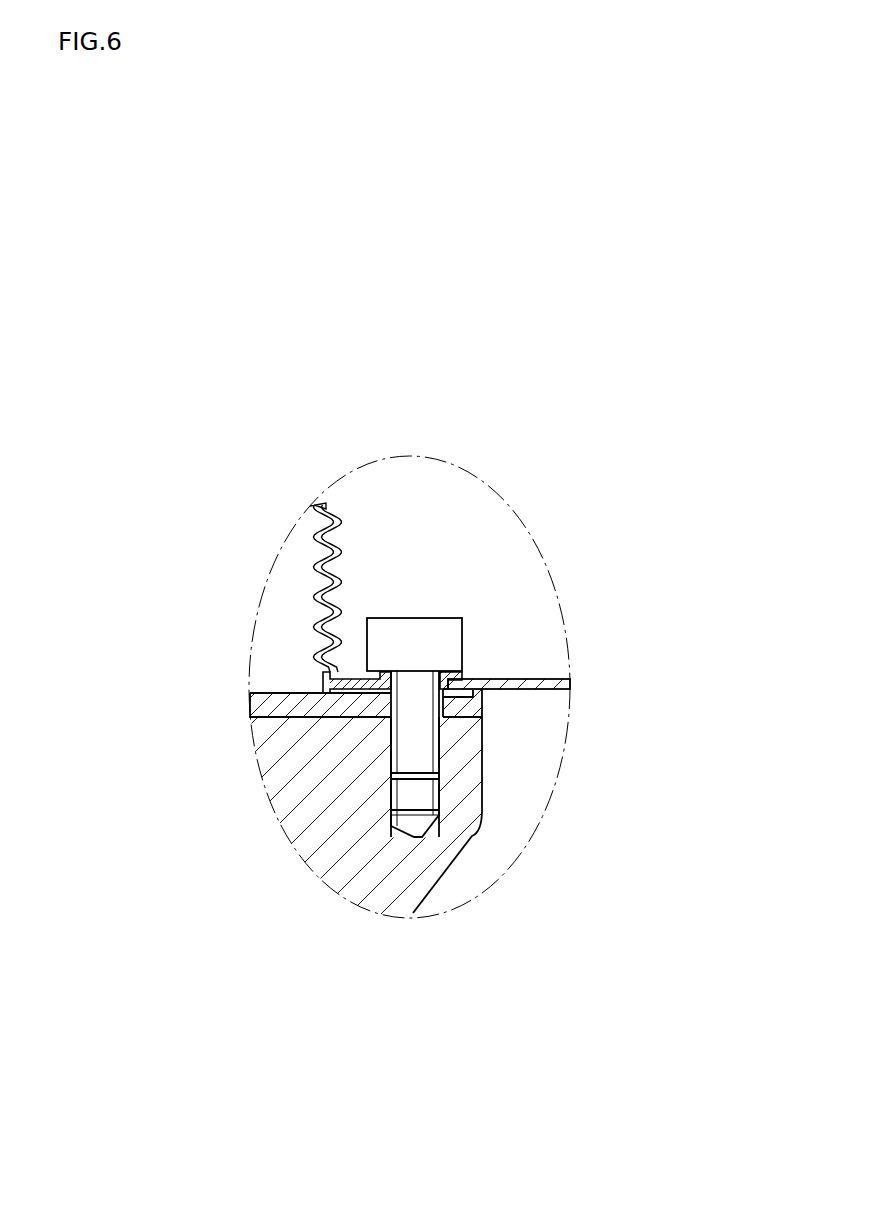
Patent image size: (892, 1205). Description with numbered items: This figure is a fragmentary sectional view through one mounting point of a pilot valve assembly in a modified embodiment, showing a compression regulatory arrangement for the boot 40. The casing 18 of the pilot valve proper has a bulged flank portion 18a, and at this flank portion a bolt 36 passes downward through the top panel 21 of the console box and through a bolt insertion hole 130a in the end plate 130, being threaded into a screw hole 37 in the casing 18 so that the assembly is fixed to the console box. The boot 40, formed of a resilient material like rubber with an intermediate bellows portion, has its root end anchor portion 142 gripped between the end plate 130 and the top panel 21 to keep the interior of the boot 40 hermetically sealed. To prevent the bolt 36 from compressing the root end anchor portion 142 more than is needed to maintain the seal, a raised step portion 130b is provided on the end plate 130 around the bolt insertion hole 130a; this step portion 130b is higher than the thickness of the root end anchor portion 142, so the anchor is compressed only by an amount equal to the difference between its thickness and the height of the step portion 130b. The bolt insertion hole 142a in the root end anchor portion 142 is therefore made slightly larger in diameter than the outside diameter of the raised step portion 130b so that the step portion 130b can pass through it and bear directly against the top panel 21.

The casing 18 is at (350, 862).
The bulged flank portion 18a is at (463, 810).
The top panel 21 is at (525, 690).
The bolt 36 is at (430, 627).
The screw hole 37 is at (437, 758).
The boot 40 is at (349, 497).
The end plate 130 is at (273, 743).
The bolt insertion hole 130a is at (430, 703).
The raised step portion 130b is at (337, 865).
The root end anchor portion 142 is at (318, 712).
The bolt insertion hole 142a is at (445, 676).